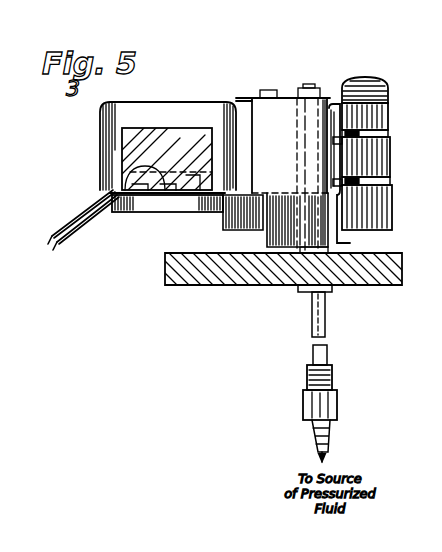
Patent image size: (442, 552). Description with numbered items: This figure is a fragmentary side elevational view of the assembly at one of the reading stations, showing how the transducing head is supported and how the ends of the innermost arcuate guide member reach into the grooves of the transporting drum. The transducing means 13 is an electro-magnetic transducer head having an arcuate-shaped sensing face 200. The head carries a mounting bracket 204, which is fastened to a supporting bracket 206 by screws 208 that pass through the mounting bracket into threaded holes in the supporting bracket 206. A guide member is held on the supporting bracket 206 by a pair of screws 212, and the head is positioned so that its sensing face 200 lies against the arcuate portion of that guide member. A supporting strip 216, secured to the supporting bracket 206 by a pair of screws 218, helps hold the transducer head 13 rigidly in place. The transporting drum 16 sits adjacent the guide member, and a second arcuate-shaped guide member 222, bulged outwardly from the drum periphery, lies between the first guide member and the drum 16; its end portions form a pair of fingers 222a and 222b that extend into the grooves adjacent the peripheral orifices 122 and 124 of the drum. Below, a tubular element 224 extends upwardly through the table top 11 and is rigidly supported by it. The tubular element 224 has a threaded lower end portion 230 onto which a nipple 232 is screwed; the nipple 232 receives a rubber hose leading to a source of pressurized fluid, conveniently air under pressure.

The table top 11 is at (242, 270).
The transducing means 13 is at (152, 112).
The drum 16 is at (372, 76).
The peripheral orifice 122 is at (360, 134).
The peripheral orifice 124 is at (361, 179).
The sensing face 200 is at (305, 160).
The mounting bracket 204 is at (123, 190).
The supporting bracket 206 is at (178, 203).
The screws 208 is at (165, 172).
The screws 212 is at (316, 70).
The supporting strip 216 is at (250, 99).
The screws 218 is at (272, 90).
The second arcuate-shaped guide member 222 is at (355, 178).
The finger 222a is at (338, 137).
The finger 222b is at (358, 200).
The tubular element 224 is at (320, 313).
The threaded lower end portion 230 is at (307, 380).
The nipple 232 is at (305, 402).